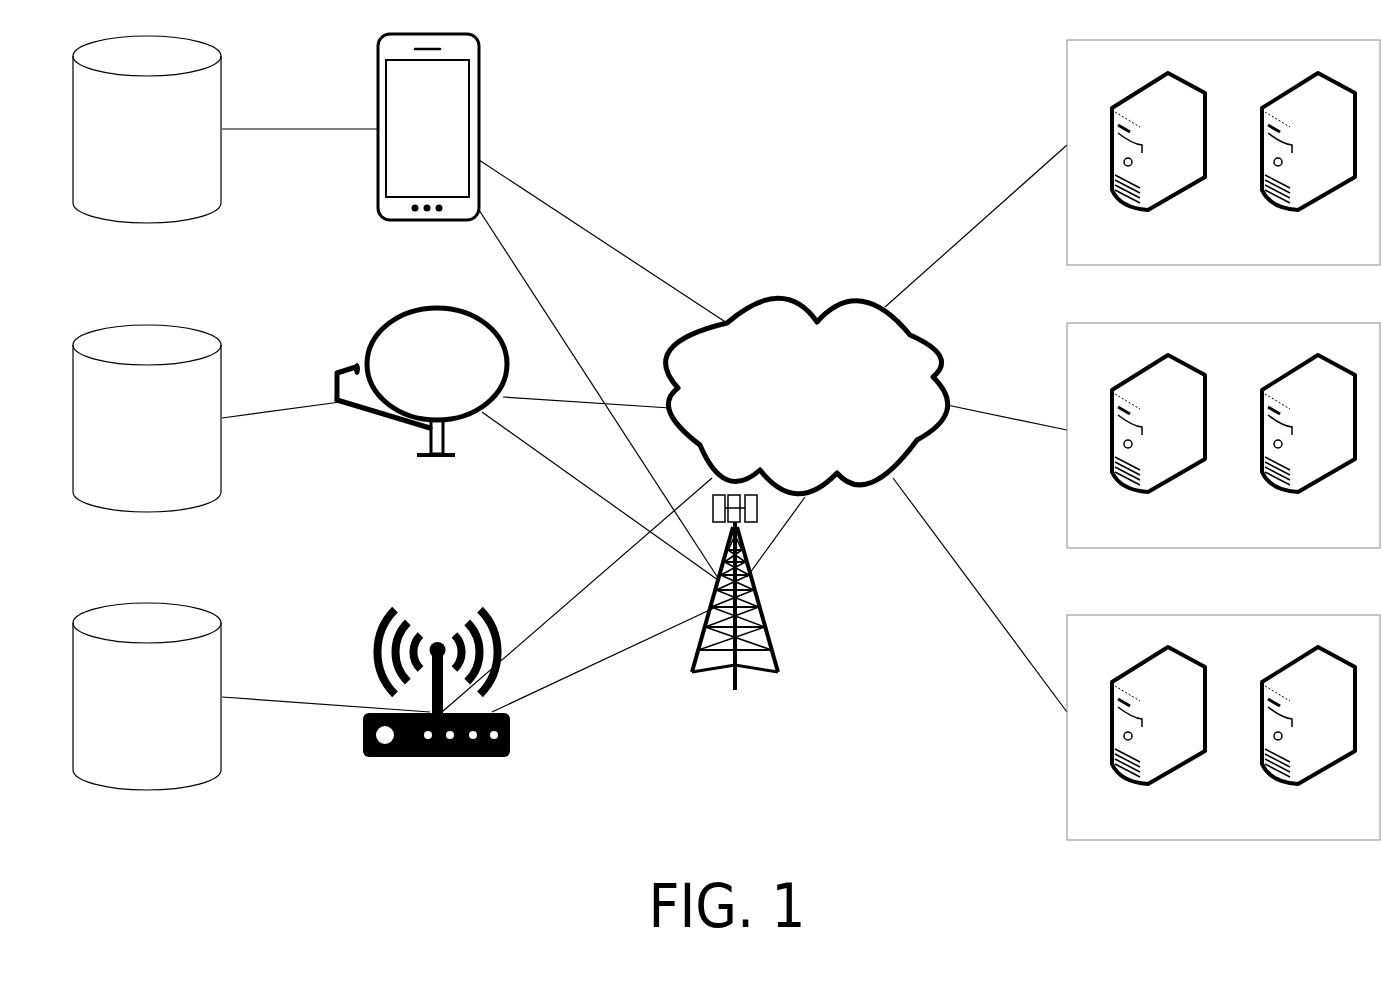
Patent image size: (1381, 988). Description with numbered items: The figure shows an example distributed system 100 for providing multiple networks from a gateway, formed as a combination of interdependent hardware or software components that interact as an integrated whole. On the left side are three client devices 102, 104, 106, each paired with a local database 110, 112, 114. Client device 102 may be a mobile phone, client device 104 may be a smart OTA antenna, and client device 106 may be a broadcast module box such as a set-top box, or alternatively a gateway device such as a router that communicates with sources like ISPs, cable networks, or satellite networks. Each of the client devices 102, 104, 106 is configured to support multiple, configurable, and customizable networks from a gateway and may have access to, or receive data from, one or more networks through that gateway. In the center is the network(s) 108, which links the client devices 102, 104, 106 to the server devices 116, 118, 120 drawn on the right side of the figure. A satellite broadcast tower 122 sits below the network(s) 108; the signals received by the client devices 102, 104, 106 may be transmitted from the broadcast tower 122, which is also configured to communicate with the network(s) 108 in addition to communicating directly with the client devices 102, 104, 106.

The system 100 is at (748, 104).
The client device 102 is at (408, 151).
The client device 104 is at (408, 522).
The client device 106 is at (420, 809).
The network(s) 108 is at (787, 441).
The local database 110 is at (127, 146).
The local database 112 is at (127, 434).
The local database 114 is at (127, 711).
The server device 116 is at (1205, 251).
The server device 118 is at (1205, 533).
The server device 120 is at (1205, 826).
The satellite broadcast tower 122 is at (715, 741).